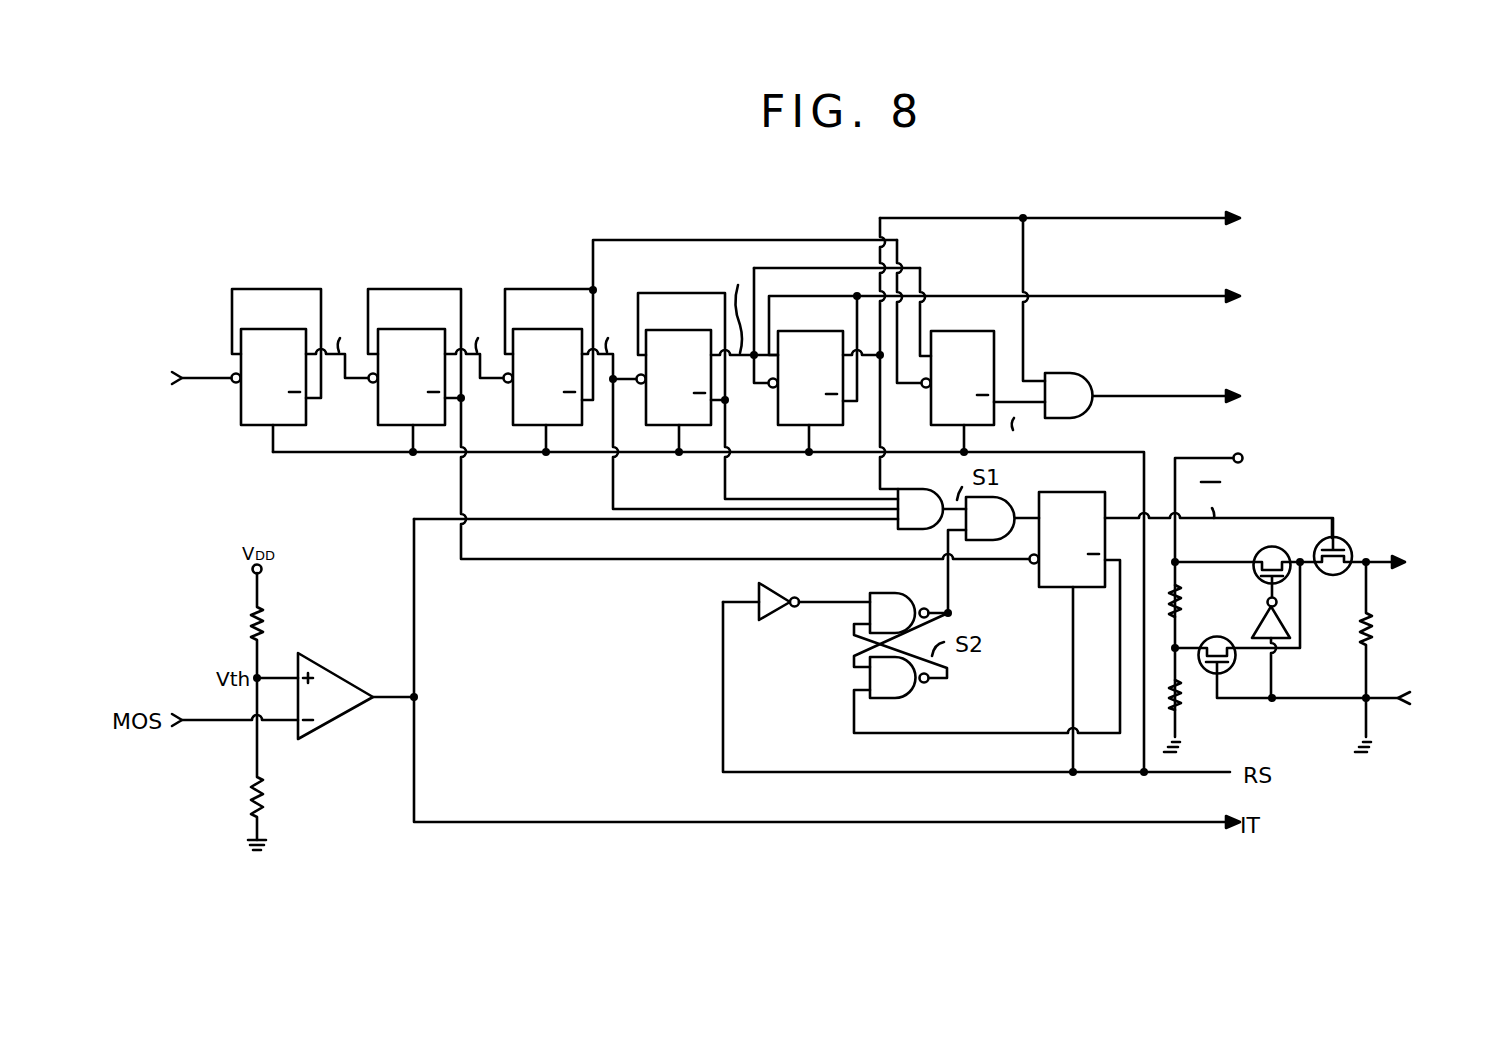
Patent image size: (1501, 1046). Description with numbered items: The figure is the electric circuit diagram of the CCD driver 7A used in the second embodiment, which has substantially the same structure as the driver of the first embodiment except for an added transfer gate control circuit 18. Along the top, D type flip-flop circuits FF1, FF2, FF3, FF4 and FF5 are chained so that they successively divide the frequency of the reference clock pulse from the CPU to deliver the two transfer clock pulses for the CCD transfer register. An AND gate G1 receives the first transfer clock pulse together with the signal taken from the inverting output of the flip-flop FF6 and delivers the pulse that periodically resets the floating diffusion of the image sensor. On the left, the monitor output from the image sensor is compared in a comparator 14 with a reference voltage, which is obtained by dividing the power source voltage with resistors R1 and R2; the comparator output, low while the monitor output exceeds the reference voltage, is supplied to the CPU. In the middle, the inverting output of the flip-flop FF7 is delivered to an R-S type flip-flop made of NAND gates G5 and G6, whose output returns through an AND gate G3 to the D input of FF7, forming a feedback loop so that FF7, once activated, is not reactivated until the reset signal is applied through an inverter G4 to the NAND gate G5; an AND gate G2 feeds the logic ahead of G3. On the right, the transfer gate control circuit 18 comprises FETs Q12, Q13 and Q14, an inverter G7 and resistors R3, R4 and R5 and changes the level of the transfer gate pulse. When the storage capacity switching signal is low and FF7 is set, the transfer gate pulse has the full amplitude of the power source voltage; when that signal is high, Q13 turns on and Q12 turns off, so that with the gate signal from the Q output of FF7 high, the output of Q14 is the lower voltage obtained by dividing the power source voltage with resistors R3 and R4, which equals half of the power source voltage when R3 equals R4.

The CCD driver 7A is at (627, 214).
The comparator 14 is at (332, 673).
The transfer gate control circuit 18 is at (1349, 485).
The D type flip-flop circuit FF1 is at (265, 337).
The D type flip-flop circuit FF2 is at (402, 337).
The D type flip-flop circuit FF3 is at (537, 337).
The D type flip-flop circuit FF4 is at (670, 338).
The D type flip-flop circuit FF5 is at (802, 339).
The D type flip-flop circuit FF6 is at (955, 339).
The D type flip-flop circuit FF7 is at (1063, 502).
The AND gate G1 is at (1096, 413).
The AND gate G2 is at (912, 493).
The AND gate G3 is at (1004, 501).
The inverter G4 is at (772, 616).
The NAND gate G5 is at (866, 602).
The NAND gate G6 is at (898, 700).
The inverter G7 is at (1265, 628).
The FET Q12 is at (1255, 554).
The FET Q13 is at (1220, 668).
The FET Q14 is at (1352, 552).
The resistor R1 is at (270, 612).
The resistor R2 is at (268, 783).
The resistor R3 is at (1182, 598).
The resistor R4 is at (1180, 733).
The resistor R5 is at (1373, 644).